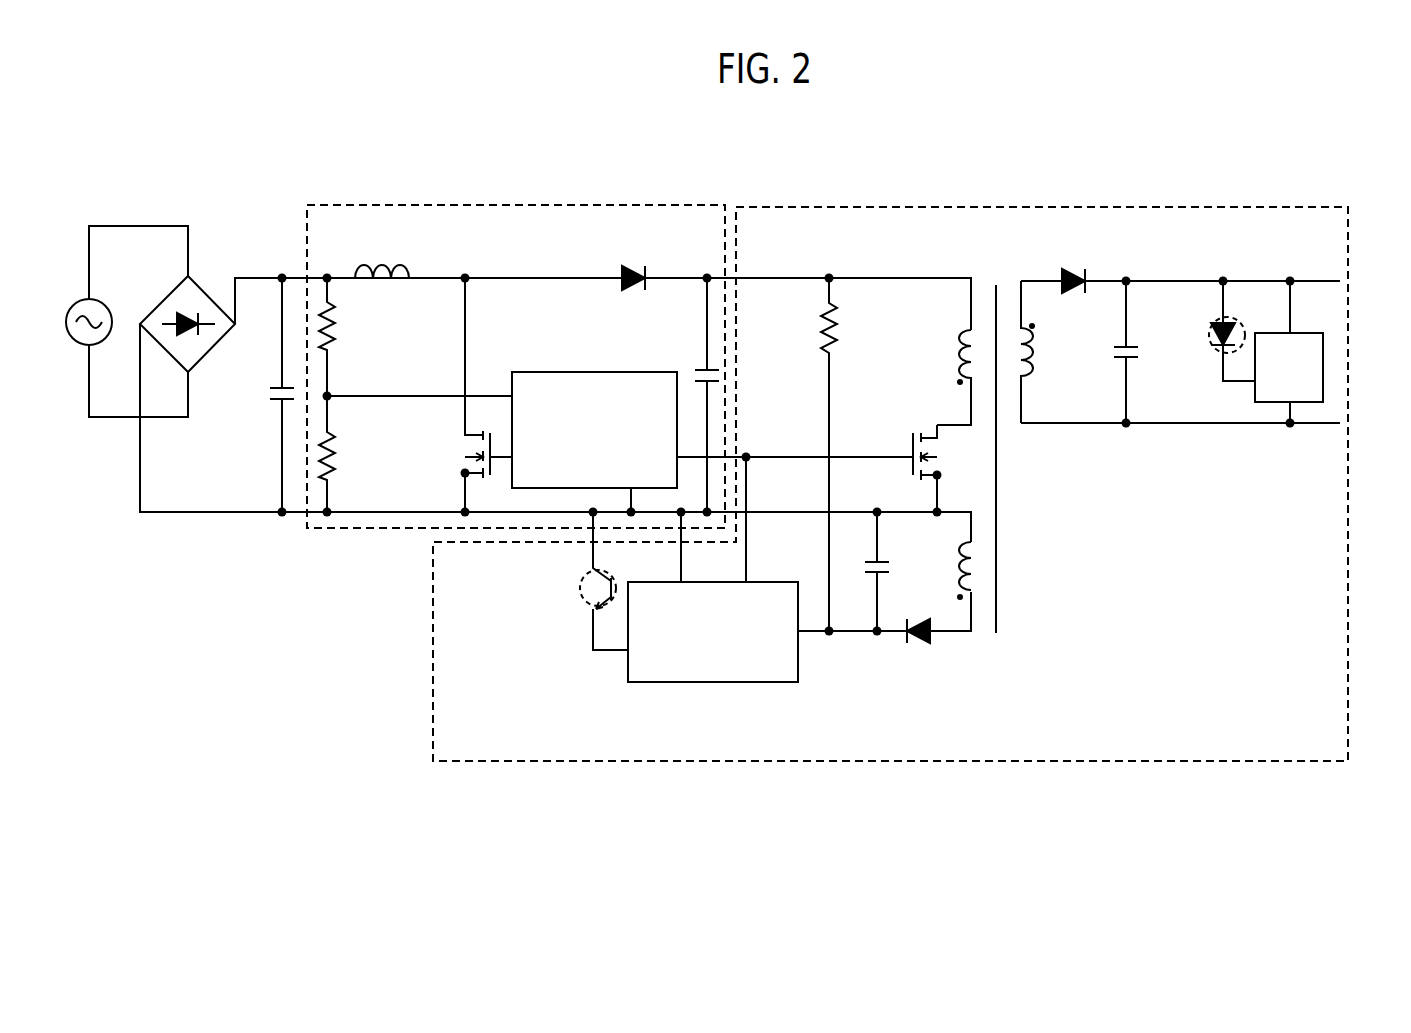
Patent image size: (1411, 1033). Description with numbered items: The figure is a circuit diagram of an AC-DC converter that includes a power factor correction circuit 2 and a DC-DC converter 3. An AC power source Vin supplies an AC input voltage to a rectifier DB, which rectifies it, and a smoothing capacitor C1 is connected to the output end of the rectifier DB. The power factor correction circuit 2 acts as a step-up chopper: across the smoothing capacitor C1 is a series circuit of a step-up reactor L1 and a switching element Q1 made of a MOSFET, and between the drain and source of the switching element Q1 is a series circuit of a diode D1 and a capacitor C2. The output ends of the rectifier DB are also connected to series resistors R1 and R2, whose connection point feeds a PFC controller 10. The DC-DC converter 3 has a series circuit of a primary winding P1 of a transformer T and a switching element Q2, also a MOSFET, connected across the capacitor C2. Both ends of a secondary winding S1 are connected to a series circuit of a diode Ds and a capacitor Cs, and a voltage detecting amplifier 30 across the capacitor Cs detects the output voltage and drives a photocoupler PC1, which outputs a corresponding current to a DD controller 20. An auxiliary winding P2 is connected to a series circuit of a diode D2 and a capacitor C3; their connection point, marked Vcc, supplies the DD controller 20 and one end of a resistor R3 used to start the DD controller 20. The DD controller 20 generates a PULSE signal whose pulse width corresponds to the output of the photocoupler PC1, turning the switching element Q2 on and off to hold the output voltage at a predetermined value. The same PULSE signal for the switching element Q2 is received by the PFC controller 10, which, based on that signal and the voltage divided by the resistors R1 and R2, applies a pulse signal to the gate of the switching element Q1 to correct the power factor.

The power factor correction circuit 2 is at (435, 205).
The DC-DC converter 3 is at (962, 762).
The PFC controller 10 is at (625, 372).
The DD controller 20 is at (710, 683).
The voltage detecting amplifier 30 is at (1323, 362).
The AC power source Vin is at (127, 321).
The rectifier DB is at (207, 292).
The smoothing capacitor C1 is at (265, 395).
The step-up reactor L1 is at (408, 253).
The resistor R1 is at (348, 337).
The resistor R2 is at (348, 454).
The switching element Q1 is at (472, 395).
The diode D1 is at (637, 265).
The capacitor C2 is at (697, 395).
The photocoupler PC1 is at (897, 465).
The resistor R3 is at (849, 454).
The switching element Q2 is at (907, 463).
The primary winding P1 is at (948, 377).
The auxiliary winding P2 is at (947, 571).
The transformer T is at (996, 441).
The secondary winding S1 is at (1049, 352).
The diode Ds is at (1077, 266).
The capacitor Cs is at (1145, 352).
The capacitor C3 is at (860, 571).
The diode D2 is at (925, 646).
The supply voltage Vcc is at (850, 645).
The pulse signal PULSE is at (770, 447).